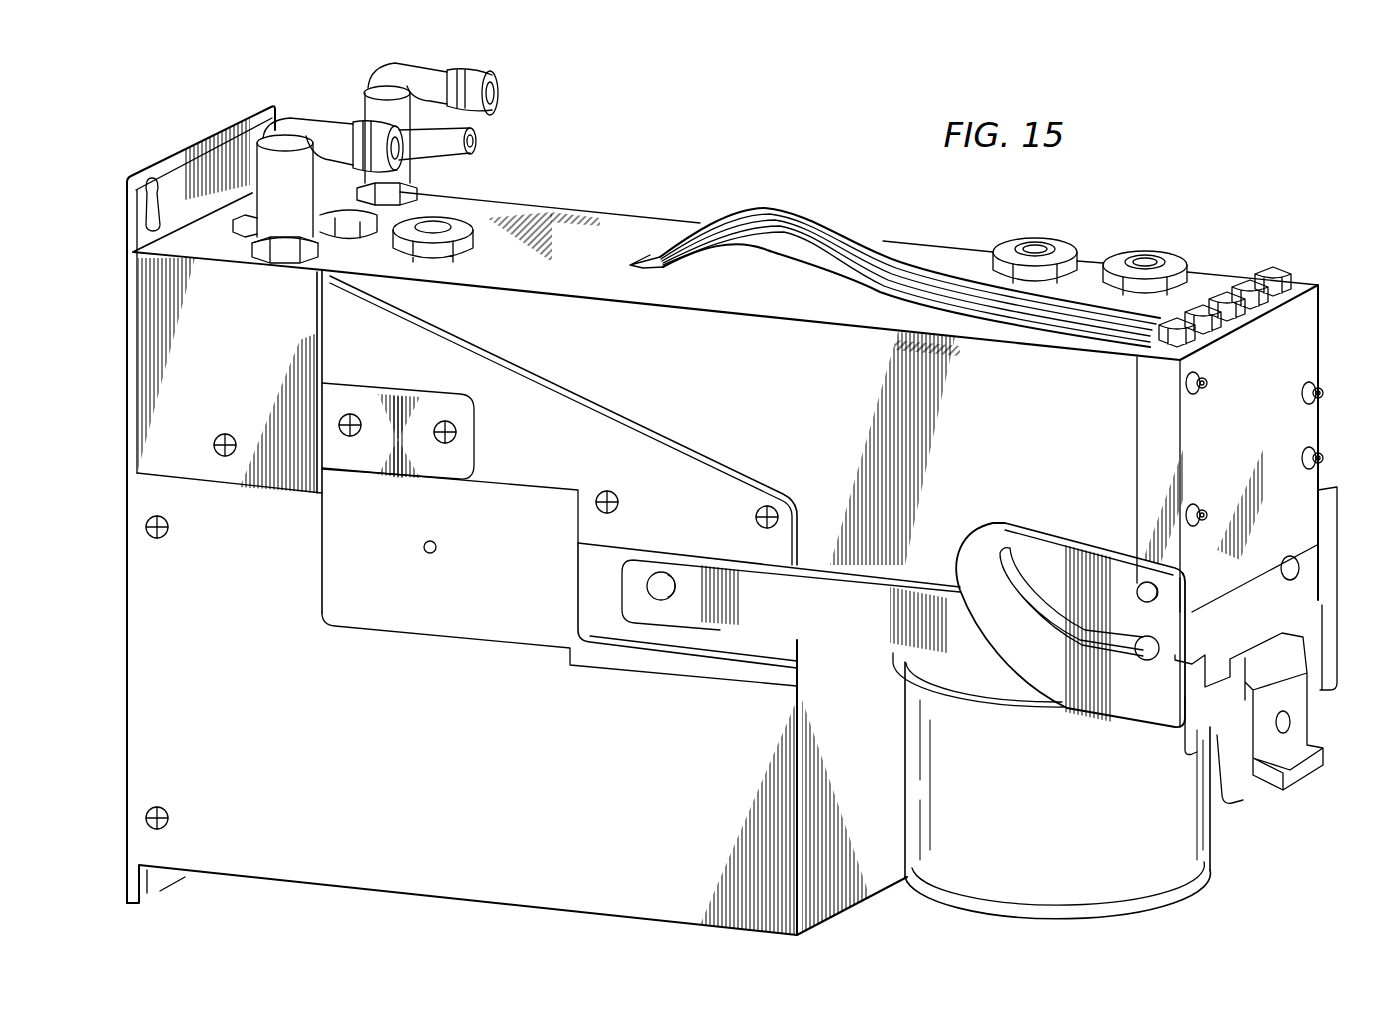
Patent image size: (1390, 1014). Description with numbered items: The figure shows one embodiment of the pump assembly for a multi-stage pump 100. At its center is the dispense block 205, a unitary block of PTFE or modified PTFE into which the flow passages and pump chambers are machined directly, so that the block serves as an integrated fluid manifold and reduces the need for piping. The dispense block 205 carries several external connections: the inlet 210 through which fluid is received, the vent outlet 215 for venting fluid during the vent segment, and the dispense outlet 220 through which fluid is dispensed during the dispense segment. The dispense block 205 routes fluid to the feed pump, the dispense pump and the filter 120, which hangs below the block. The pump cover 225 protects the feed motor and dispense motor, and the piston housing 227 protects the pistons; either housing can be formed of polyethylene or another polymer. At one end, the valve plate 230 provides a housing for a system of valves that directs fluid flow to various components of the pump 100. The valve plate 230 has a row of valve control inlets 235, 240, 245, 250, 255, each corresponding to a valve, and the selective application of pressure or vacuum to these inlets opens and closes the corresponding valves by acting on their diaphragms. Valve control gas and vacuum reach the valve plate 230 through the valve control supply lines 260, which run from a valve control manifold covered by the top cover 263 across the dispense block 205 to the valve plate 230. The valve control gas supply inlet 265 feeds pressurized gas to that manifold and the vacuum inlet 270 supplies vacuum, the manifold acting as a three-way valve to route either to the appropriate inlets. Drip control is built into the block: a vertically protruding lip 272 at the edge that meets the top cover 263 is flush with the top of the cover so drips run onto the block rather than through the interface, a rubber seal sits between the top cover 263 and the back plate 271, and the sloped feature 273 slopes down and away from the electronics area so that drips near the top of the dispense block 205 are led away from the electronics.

The pump 100 is at (740, 145).
The filter 120 is at (1215, 840).
The dispense block 205 is at (650, 230).
The inlet 210 is at (1035, 238).
The vent outlet 215 is at (1145, 250).
The dispense outlet 220 is at (455, 212).
The pump cover 225 is at (297, 881).
The piston housing 227 is at (464, 639).
The valve plate 230 is at (1315, 303).
The valve control inlet 235 is at (1200, 345).
The valve control inlet 240 is at (1220, 333).
The valve control inlet 245 is at (1250, 322).
The valve control inlet 250 is at (1272, 303).
The valve control inlet 255 is at (1275, 266).
The valve control supply lines 260 is at (813, 218).
The top cover 263 is at (210, 226).
The valve control gas supply inlet 265 is at (308, 128).
The vacuum inlet 270 is at (347, 98).
The back plate 271 is at (127, 598).
The lip 272 is at (348, 264).
The sloped feature 273 is at (598, 383).